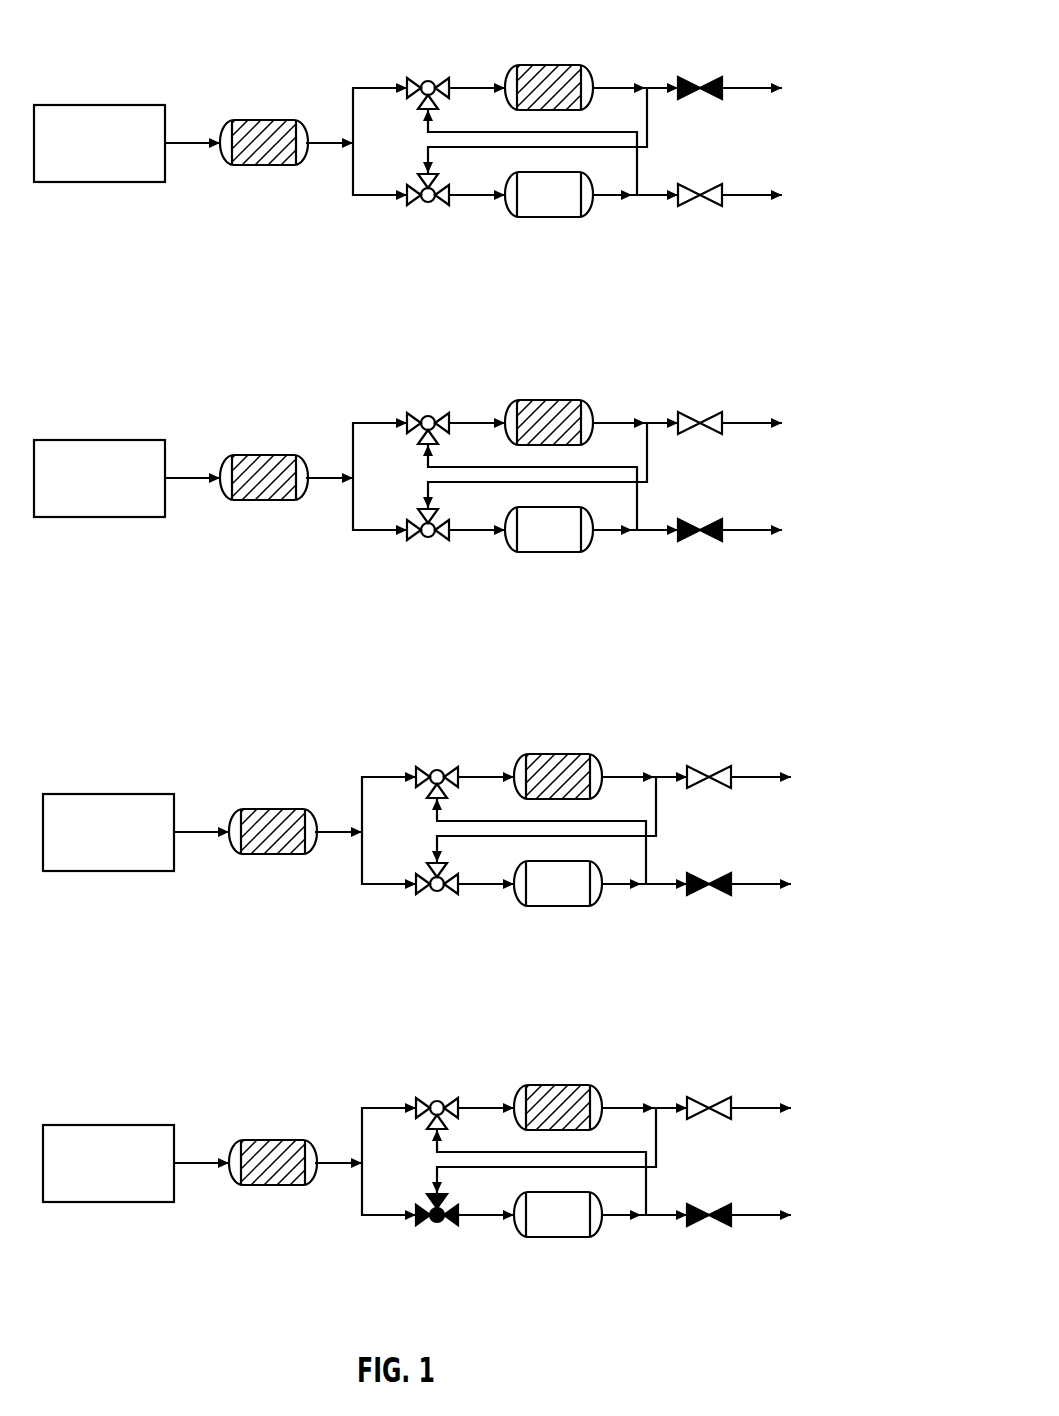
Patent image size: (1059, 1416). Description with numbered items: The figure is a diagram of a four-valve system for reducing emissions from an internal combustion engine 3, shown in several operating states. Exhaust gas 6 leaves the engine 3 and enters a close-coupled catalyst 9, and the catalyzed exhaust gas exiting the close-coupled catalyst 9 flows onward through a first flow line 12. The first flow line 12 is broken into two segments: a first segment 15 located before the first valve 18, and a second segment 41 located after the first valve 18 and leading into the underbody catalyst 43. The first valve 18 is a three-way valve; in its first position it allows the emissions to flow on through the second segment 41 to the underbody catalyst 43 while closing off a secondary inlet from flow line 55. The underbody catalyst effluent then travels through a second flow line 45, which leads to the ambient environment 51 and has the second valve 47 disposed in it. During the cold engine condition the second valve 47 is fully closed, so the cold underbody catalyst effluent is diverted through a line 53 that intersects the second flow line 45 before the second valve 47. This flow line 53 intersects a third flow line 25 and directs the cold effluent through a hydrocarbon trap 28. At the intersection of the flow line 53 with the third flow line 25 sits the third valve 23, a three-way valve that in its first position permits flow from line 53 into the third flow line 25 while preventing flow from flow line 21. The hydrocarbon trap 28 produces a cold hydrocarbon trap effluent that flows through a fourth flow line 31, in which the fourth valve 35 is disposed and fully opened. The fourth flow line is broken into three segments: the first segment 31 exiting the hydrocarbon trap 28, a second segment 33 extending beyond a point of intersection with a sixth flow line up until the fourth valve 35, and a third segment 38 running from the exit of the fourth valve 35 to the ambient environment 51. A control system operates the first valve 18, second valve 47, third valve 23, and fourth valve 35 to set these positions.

The internal combustion engine 3 is at (104, 636).
The exhaust gas 6 is at (197, 622).
The close-coupled catalyst 9 is at (262, 637).
The first flow line 12 is at (328, 686).
The first segment 15 is at (374, 591).
The first valve 18 is at (428, 570).
The flow line 21 is at (371, 716).
The third valve 23 is at (418, 672).
The third flow line 25 is at (478, 739).
The hydrocarbon trap 28 is at (553, 724).
The fourth flow line 31 is at (603, 759).
The second segment 33 is at (653, 739).
The fourth valve 35 is at (694, 758).
The third segment 38 is at (756, 739).
The second segment 41 is at (481, 568).
The underbody catalyst 43 is at (547, 582).
The second flow line 45 is at (640, 567).
The second valve 47 is at (704, 566).
The ambient environment 51 is at (756, 567).
The flow line 53 is at (574, 640).
The flow line 55 is at (570, 662).